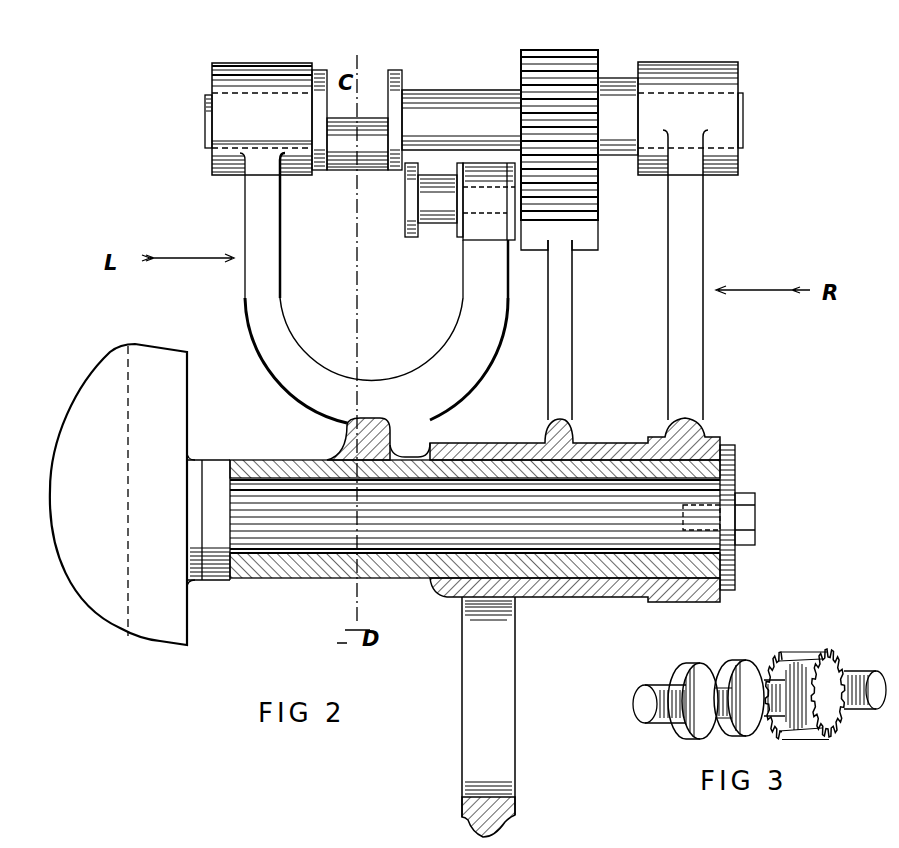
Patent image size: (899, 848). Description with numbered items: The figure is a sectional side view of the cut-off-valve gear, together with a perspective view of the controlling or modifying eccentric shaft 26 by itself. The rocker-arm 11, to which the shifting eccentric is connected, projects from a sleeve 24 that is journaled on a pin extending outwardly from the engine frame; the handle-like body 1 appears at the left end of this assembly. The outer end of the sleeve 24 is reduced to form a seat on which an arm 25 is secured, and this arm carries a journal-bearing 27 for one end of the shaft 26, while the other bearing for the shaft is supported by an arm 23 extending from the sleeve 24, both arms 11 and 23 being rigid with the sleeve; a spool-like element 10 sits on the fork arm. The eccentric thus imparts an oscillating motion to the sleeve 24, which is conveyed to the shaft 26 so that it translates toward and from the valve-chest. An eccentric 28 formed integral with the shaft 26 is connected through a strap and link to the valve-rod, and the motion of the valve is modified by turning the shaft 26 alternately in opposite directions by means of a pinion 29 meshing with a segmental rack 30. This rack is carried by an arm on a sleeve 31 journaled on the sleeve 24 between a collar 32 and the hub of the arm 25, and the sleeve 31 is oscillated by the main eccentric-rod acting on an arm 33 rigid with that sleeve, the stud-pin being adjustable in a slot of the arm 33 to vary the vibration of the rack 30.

In FIG. 2, the handle body 1 is at (178, 398).
In FIG. 2, the spool on fork arm 10 is at (440, 212).
In FIG. 2, the rocker-arm 11 is at (480, 283).
In FIG. 2, the arm 23 is at (258, 213).
In FIG. 2, the sleeve 24 is at (297, 578).
In FIG. 2, the arm 25 is at (703, 320).
In FIG. 2, the shaft 26 is at (426, 96).
In FIG. 3, the shaft 26 is at (655, 686).
In FIG. 2, the journal-bearing 27 is at (222, 78).
In FIG. 2, the eccentric 28 is at (341, 172).
In FIG. 3, the eccentric 28 is at (716, 740).
In FIG. 2, the pinion 29 is at (523, 67).
In FIG. 3, the pinion 29 is at (808, 655).
In FIG. 2, the segmental rack 30 is at (598, 232).
In FIG. 2, the sleeve 31 is at (605, 441).
In FIG. 2, the collar 32 is at (448, 437).
In FIG. 2, the arm 33 is at (515, 735).